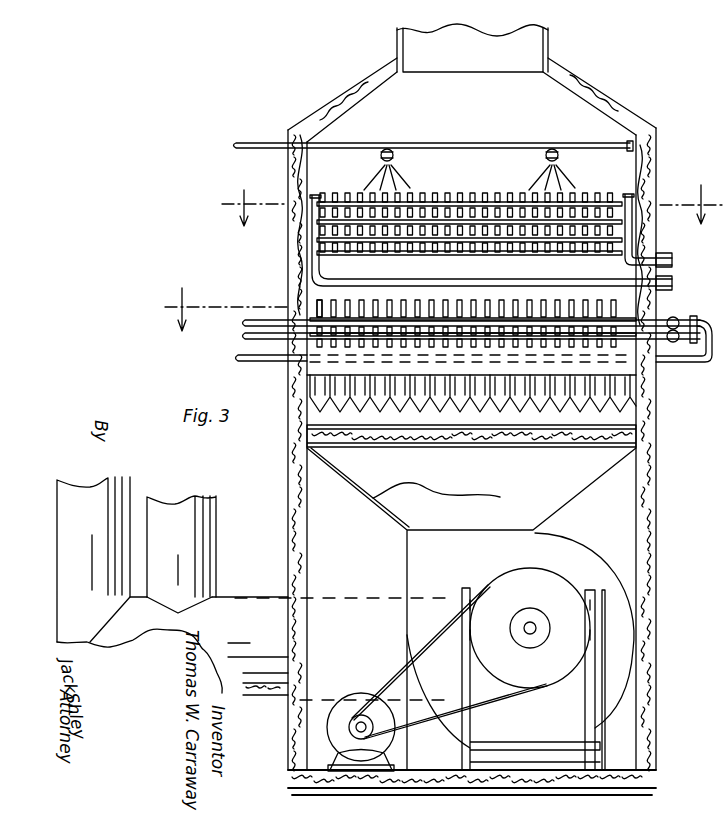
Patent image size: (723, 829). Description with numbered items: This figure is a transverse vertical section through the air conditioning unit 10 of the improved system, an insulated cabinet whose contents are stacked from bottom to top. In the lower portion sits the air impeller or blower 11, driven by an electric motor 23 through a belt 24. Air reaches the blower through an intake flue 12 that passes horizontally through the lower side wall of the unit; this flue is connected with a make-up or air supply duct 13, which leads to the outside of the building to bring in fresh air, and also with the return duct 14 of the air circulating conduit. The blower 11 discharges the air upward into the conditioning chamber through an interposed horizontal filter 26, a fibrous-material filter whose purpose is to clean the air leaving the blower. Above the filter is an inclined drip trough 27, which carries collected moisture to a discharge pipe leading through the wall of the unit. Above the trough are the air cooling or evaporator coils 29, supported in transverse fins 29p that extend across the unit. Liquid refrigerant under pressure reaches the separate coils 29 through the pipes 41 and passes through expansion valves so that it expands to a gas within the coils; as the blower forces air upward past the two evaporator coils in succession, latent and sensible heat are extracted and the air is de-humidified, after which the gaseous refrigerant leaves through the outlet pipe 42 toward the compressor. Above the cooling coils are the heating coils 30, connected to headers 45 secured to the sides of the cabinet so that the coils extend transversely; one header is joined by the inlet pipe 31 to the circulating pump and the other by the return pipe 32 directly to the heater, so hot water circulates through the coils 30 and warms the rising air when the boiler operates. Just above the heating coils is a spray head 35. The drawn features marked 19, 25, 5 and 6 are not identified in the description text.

The air conditioning unit 10 is at (655, 440).
The air impeller or blower 11 is at (582, 572).
The intake flue 12 is at (262, 598).
The make-up or air supply duct 13 is at (97, 480).
The return duct 14 is at (204, 516).
The outlet stack 19 is at (550, 38).
The electric motor 23 is at (359, 694).
The belt 24 is at (435, 632).
The hopper 25 is at (390, 522).
The horizontal filter 26 is at (522, 450).
The inclined drip trough 27 is at (305, 406).
The air cooling or evaporator coils 29 is at (510, 300).
The fins 29p is at (423, 300).
The heating coils 30 is at (476, 192).
The inlet pipe 31 is at (658, 262).
The return pipe 32 is at (600, 282).
The spray head 35 is at (500, 143).
The pipes 41 is at (245, 338).
The outlet pipe 42 is at (262, 360).
The headers 45 is at (655, 178).
The section line 5 is at (472, 196).
The section line 6 is at (226, 299).